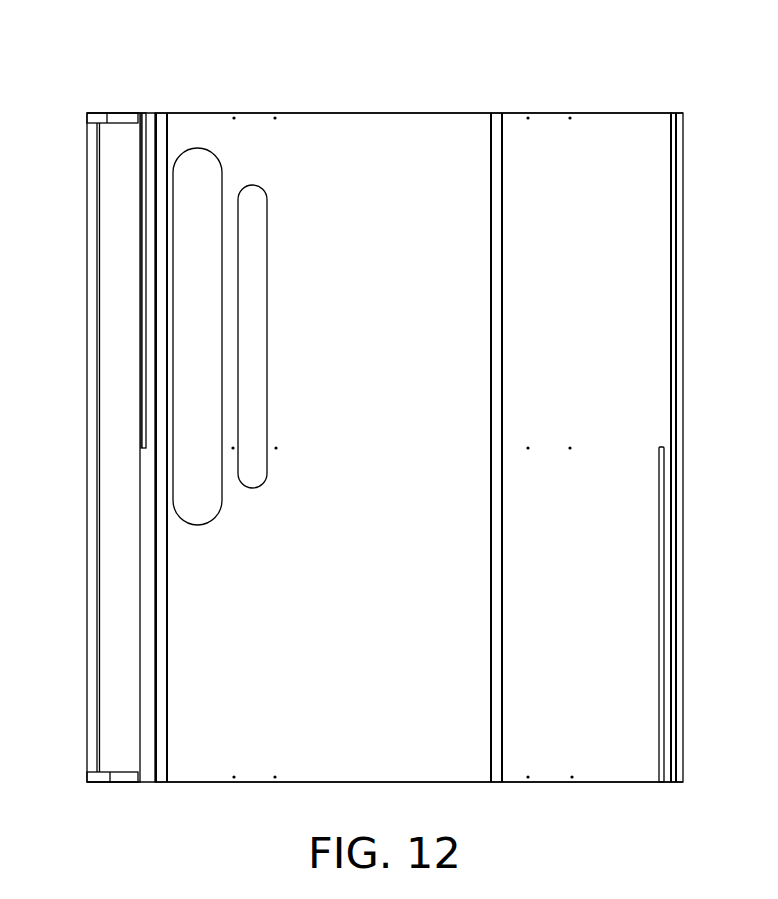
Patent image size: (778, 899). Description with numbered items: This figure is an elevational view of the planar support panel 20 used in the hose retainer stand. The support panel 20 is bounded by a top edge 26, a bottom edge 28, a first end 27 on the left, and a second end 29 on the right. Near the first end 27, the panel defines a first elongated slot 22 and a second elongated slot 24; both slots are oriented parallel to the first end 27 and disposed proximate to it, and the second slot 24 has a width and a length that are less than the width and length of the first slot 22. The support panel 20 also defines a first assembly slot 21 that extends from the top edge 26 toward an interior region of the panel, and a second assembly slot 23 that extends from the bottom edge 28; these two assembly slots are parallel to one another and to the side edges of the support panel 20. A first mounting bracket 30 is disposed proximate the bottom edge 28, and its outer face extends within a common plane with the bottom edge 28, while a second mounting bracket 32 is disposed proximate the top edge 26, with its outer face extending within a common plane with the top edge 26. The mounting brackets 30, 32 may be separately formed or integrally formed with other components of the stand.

The support panel 20 is at (88, 85).
The first assembly slot 21 is at (146, 366).
The first elongated slot 22 is at (220, 203).
The second assembly slot 23 is at (662, 593).
The second elongated slot 24 is at (252, 212).
The top edge 26 is at (460, 113).
The first end 27 is at (96, 269).
The bottom edge 28 is at (548, 782).
The second end 29 is at (683, 255).
The first mounting bracket 30 is at (88, 780).
The second mounting bracket 32 is at (104, 118).